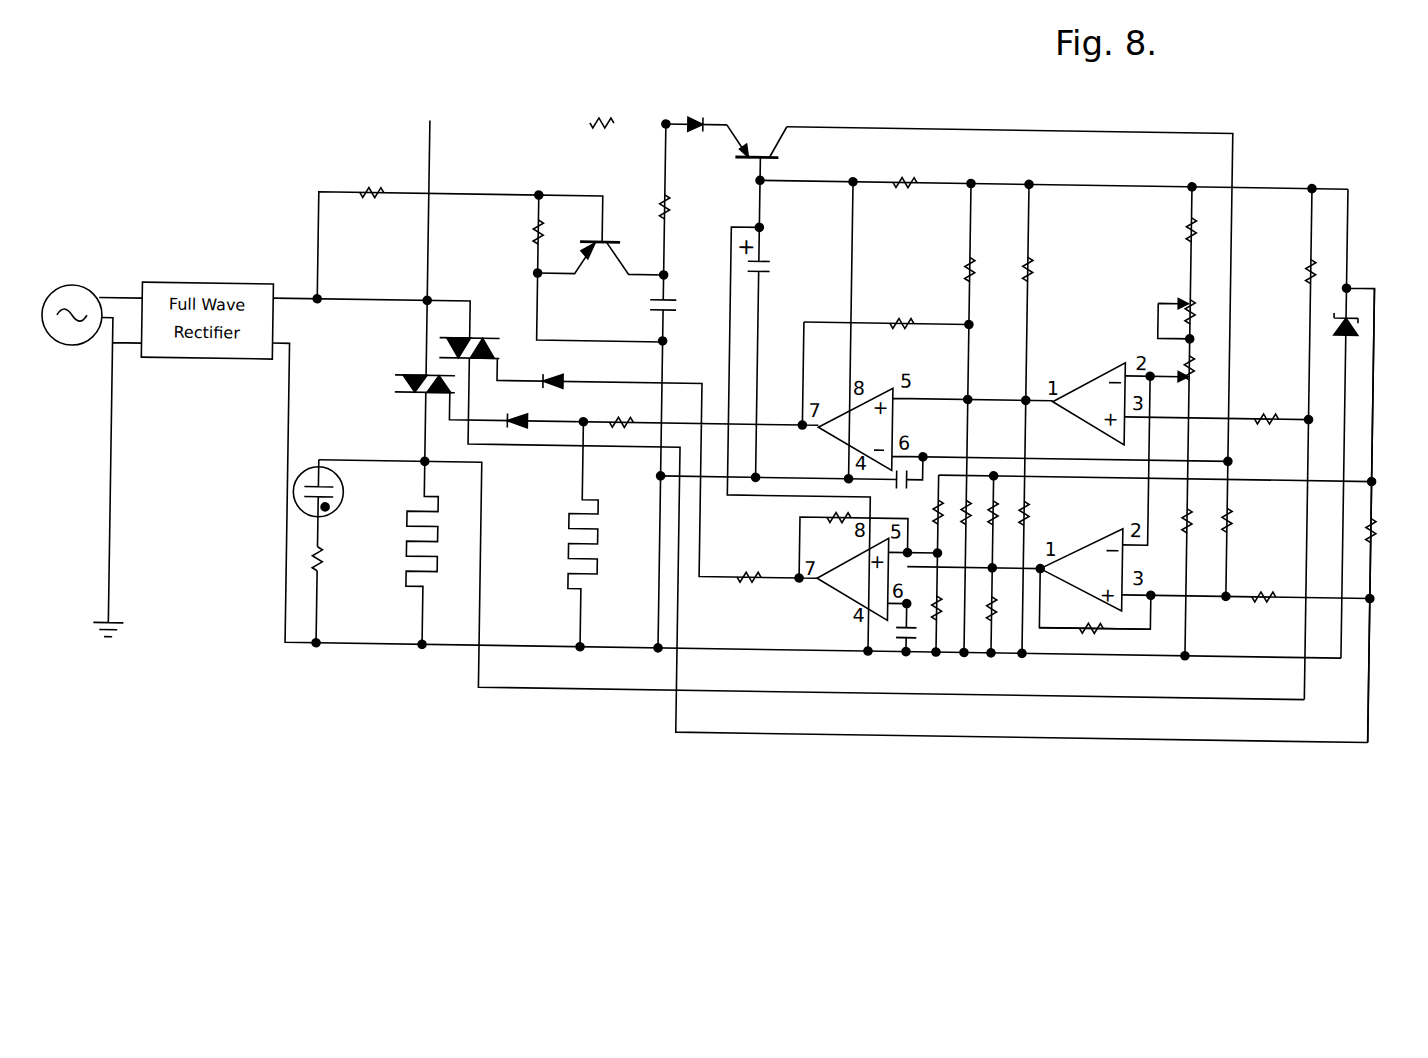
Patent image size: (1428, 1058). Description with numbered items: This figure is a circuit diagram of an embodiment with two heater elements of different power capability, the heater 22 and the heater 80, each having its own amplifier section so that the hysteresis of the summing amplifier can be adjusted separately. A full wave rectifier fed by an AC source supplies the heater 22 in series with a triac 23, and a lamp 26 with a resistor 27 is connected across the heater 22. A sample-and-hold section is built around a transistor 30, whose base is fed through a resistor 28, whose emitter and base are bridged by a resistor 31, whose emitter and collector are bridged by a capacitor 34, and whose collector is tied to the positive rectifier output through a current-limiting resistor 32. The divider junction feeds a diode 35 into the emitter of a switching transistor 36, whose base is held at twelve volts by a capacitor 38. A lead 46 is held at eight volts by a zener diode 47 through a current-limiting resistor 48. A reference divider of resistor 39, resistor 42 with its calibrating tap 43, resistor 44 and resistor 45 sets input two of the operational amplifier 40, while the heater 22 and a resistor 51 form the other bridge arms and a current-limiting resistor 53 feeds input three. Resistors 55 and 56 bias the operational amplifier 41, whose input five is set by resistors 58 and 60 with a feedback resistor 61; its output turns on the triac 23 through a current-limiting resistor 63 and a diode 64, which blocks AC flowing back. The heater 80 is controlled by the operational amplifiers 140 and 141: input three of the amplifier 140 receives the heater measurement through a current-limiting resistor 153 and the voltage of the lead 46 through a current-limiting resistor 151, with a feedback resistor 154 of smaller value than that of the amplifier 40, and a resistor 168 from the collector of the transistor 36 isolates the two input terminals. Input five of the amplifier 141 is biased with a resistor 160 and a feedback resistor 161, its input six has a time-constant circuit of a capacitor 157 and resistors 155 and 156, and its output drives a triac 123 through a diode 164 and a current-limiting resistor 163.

The heater element 22 is at (432, 500).
The switch 23 is at (398, 380).
The light-emitting diode or neon lamp 26 is at (344, 500).
The resistor 27 is at (326, 566).
The resistor 28 is at (364, 197).
The transistor 30 is at (608, 288).
The resistor 31 is at (532, 241).
The current-limiting resistor 32 is at (597, 122).
The capacitor 34 is at (668, 302).
The diode 35 is at (698, 120).
The switching transistor 36 is at (766, 126).
The capacitor 38 is at (762, 263).
The resistor 39 is at (1183, 226).
The operational amplifier 40 is at (1090, 361).
The operational amplifier 41 is at (888, 372).
The resistor 42 is at (1190, 296).
The tap 43 is at (1162, 298).
The resistor 44 is at (1191, 366).
The resistor 45 is at (1185, 517).
The lead 46 is at (1098, 181).
The zener diode 47 is at (1340, 337).
The current-limiting resistor 48 is at (908, 181).
The resistor 51 is at (1303, 270).
The current-limiting resistor 53 is at (1264, 411).
The resistor 55 is at (1031, 265).
The resistor 56 is at (1147, 368).
The resistor 58 is at (963, 266).
The resistor 60 is at (960, 498).
The feedback resistor 61 is at (898, 320).
The current-limiting resistor 63 is at (612, 425).
The diode 64 is at (528, 432).
The heater 80 is at (592, 500).
The triac 123 is at (495, 336).
The operational amplifier 140 is at (1092, 536).
The operational amplifier 141 is at (856, 553).
The current-limiting resistor 151 is at (1368, 530).
The current-limiting resistor 153 is at (934, 508).
The feedback resistor 154 is at (1094, 638).
The resistor 155 is at (992, 498).
The resistor 156 is at (1000, 640).
The capacitor 157 is at (897, 654).
The resistor 160 is at (942, 642).
The feedback resistor 161 is at (826, 517).
The current-limiting resistor 163 is at (748, 583).
The diode 164 is at (549, 383).
The resistor 168 is at (1232, 515).